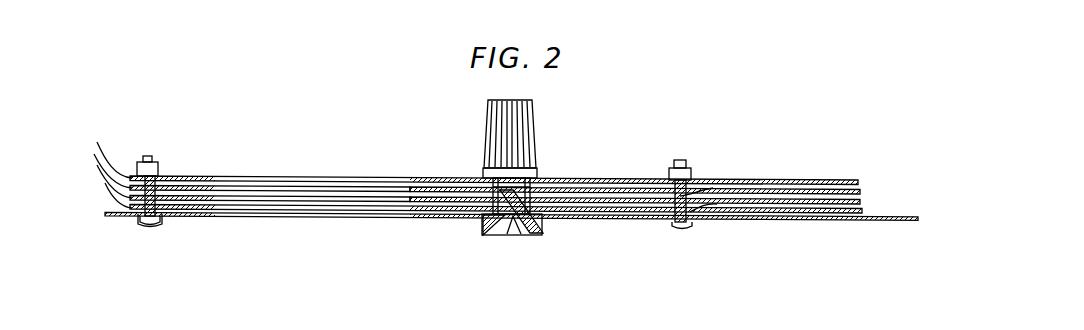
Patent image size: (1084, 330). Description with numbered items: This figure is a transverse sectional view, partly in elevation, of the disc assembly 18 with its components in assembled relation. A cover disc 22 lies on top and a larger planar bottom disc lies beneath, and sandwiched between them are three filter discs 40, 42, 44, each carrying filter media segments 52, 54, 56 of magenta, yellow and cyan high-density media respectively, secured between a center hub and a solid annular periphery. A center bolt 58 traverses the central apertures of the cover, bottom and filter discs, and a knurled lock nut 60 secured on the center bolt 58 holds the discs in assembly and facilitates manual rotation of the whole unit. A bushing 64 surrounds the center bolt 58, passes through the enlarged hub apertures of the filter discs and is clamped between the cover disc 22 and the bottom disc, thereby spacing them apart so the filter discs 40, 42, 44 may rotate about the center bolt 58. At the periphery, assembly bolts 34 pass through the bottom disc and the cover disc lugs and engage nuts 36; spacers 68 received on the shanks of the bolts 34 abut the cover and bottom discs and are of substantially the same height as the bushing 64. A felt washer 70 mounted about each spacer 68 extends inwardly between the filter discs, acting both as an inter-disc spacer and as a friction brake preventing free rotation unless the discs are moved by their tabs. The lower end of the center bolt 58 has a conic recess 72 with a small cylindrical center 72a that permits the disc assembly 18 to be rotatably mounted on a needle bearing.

The disc assembly 18 is at (808, 150).
The cover disc 22 is at (842, 175).
The bolt 34 is at (151, 222).
The nut 36 is at (157, 163).
The filter disc 40 is at (862, 191).
The filter disc 42 is at (862, 202).
The filter disc 44 is at (862, 211).
The filter media segments 52 is at (632, 190).
The filter media segments 54 is at (257, 200).
The filter media segments 56 is at (643, 218).
The center bolt 58 is at (527, 232).
The lock nut 60 is at (515, 133).
The bushing 64 is at (536, 188).
The spacer 68 is at (143, 219).
The felt washer 70 is at (762, 242).
The conic recess 72 is at (522, 237).
The cylindrical center 72a is at (503, 233).